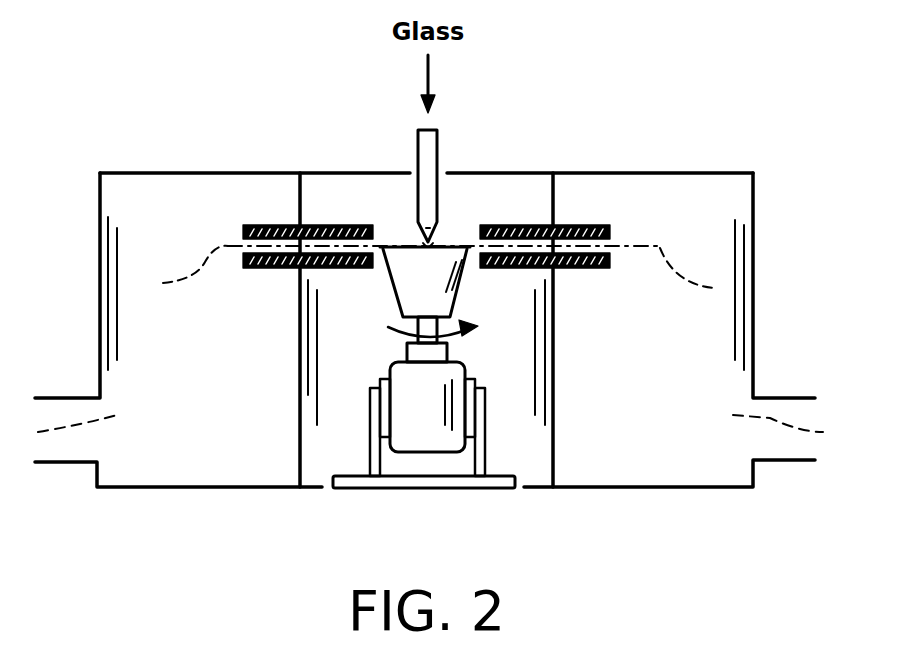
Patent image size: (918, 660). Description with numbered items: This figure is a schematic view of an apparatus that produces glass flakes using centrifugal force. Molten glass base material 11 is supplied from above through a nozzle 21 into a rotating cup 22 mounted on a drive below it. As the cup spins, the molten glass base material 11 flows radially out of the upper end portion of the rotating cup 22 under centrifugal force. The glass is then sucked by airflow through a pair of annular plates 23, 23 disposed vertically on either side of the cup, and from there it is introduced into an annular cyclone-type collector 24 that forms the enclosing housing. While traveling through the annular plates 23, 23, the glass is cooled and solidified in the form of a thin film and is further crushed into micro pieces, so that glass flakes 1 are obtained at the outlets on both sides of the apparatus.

The glass flakes 1 is at (70, 420).
The molten glass base material 11 is at (445, 242).
The nozzle 21 is at (440, 164).
The rotating cup 22 is at (405, 258).
The annular plates 23 is at (612, 232).
The annular cyclone-type collector 24 is at (200, 173).